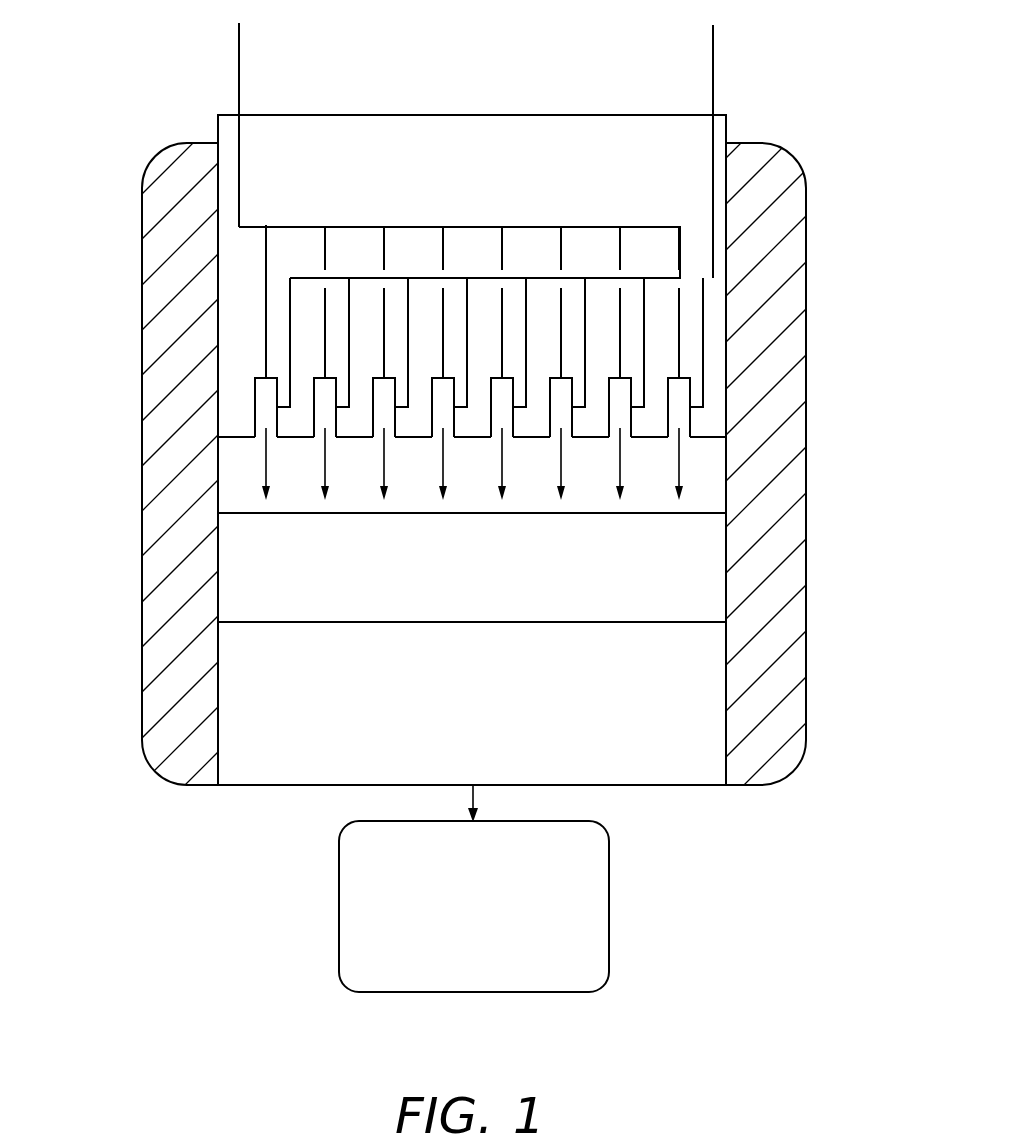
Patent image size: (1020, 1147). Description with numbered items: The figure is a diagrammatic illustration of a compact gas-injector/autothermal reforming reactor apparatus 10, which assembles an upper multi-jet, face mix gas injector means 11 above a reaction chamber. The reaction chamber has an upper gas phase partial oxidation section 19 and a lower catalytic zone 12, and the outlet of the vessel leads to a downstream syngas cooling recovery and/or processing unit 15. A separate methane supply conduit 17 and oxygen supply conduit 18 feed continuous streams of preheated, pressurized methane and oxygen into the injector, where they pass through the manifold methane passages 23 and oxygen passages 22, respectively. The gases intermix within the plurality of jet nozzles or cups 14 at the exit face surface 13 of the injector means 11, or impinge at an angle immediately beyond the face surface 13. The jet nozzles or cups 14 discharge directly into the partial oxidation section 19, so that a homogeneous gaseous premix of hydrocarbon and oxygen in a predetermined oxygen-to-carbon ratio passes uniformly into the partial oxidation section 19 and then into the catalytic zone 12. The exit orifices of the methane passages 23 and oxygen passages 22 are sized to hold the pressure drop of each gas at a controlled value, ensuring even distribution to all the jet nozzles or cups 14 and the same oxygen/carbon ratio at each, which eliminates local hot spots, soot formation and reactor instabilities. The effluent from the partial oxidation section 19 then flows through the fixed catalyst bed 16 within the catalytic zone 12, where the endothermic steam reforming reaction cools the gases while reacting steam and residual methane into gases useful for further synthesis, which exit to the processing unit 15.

The gas-injector/autothermal reforming reactor apparatus 10 is at (193, 110).
The multi-jet, face mix gas injector means 11 is at (718, 317).
The catalytic zone 12 is at (713, 562).
The exit face surface 13 is at (705, 432).
The jet nozzles or cups 14 is at (692, 423).
The syngas cooling recovery and/or processing unit 15 is at (585, 962).
The fixed catalyst bed 16 is at (237, 512).
The methane supply conduit 17 is at (713, 67).
The oxygen supply conduit 18 is at (240, 60).
The gas phase partial oxidation section 19 is at (705, 481).
The oxygen passages 22 is at (680, 238).
The methane passages 23 is at (288, 298).